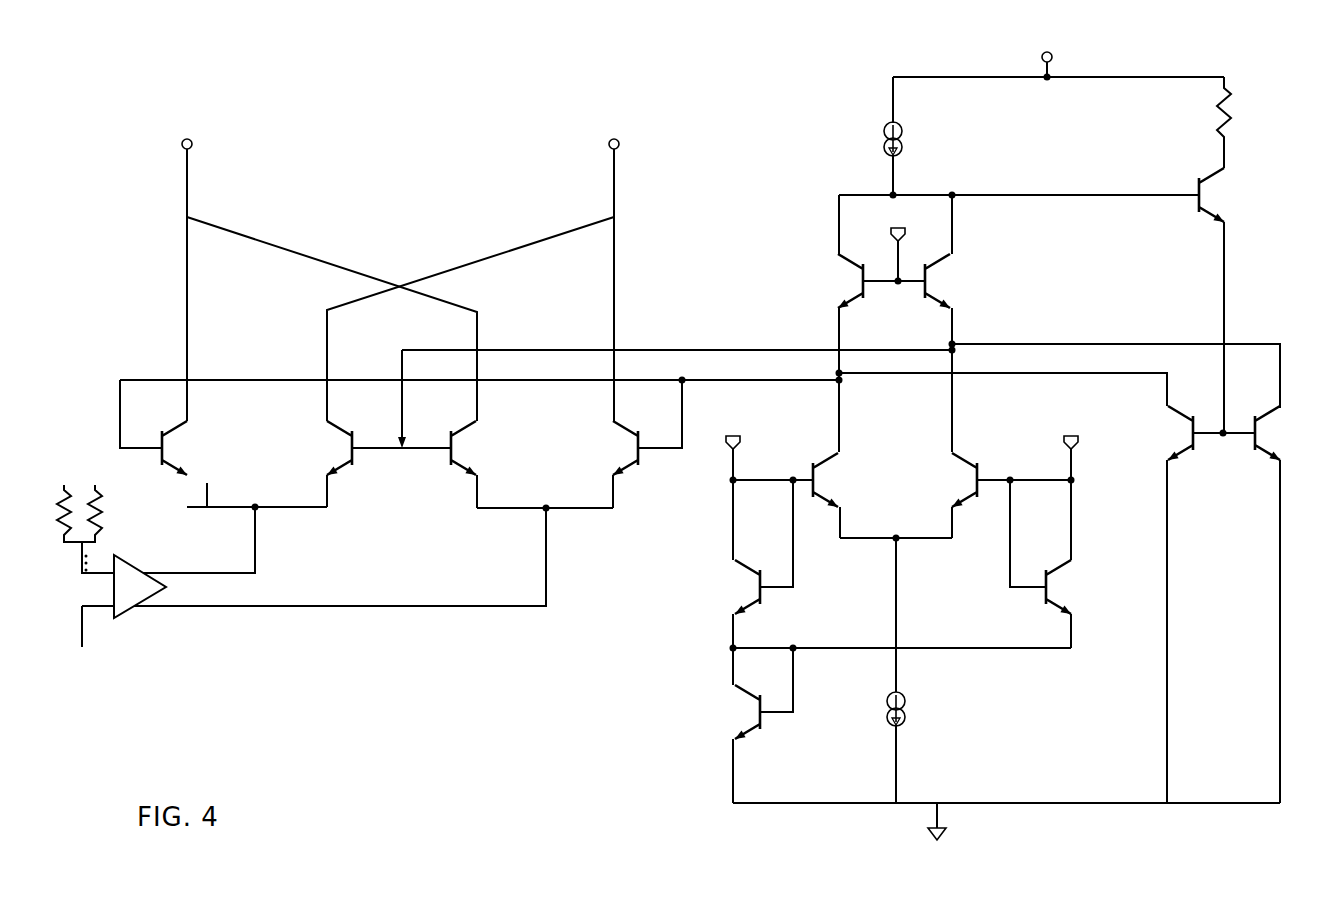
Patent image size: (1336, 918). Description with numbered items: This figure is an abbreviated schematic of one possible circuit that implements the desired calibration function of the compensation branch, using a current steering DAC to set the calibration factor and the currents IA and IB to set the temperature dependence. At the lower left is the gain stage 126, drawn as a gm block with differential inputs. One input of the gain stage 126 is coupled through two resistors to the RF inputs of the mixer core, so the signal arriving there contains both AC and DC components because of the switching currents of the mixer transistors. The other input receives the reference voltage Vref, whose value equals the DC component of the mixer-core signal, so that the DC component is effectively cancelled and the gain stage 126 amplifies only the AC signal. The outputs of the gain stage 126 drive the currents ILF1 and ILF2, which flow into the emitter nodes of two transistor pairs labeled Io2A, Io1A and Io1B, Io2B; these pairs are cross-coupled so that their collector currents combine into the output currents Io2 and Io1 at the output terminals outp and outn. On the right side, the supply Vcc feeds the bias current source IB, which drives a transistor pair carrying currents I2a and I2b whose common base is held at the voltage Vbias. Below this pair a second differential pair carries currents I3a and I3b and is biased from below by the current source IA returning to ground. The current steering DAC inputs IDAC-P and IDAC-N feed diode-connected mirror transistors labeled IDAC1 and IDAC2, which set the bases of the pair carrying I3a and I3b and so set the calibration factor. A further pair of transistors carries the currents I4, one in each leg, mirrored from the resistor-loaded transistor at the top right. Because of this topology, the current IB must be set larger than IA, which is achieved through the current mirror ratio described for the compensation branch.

The gain stage 126 is at (120, 618).
The positive output terminal outp is at (187, 266).
The negative output terminal outn is at (614, 266).
The output current Io2 is at (204, 165).
The output current Io1 is at (603, 165).
The transistor carrying current Io2A is at (207, 473).
The transistor carrying current Io1A is at (312, 473).
The transistor carrying current Io1B is at (495, 470).
The transistor carrying current Io2B is at (600, 470).
The loop filter current ILF1 is at (245, 520).
The loop filter current ILF2 is at (530, 520).
The reference voltage Vref is at (87, 638).
The supply voltage Vcc is at (1058, 52).
The bias voltage input Vbias is at (892, 243).
The current IB is at (906, 136).
The current IA is at (909, 670).
The transistor carrying current I2a is at (828, 205).
The transistor carrying current I2b is at (962, 205).
The transistor carrying current I3a is at (860, 485).
The transistor carrying current I3b is at (936, 485).
The transistor pair carrying current I4 is at (1158, 405).
The positive DAC current input IDAC-P is at (728, 445).
The negative DAC current input IDAC-N is at (1063, 445).
The DAC current mirror transistors IDAC1 is at (714, 533).
The DAC current mirror transistor IDAC2 is at (1079, 533).